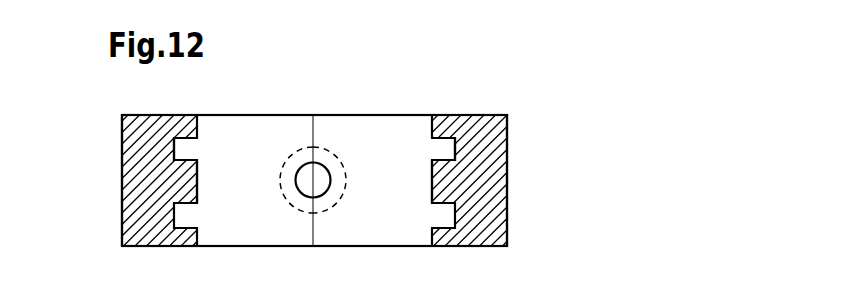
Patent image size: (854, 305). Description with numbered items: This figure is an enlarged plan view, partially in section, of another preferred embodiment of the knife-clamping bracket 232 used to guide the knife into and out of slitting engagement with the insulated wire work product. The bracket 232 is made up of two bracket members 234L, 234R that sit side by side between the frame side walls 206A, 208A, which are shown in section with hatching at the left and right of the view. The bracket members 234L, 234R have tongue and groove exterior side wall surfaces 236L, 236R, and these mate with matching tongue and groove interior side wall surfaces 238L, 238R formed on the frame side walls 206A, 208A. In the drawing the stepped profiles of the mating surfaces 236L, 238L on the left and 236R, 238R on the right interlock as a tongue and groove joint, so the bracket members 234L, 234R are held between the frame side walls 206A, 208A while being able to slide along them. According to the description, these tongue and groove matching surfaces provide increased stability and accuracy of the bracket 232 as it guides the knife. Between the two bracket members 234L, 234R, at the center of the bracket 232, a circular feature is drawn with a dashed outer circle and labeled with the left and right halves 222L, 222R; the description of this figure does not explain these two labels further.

The bracket 232 is at (325, 97).
The frame side wall 206A is at (122, 216).
The frame side wall 208A is at (507, 207).
The tongue and groove interior side wall surface 238L is at (168, 182).
The tongue and groove interior side wall surface 238R is at (448, 183).
The tongue and groove exterior side wall surface 236L is at (192, 143).
The tongue and groove exterior side wall surface 236R is at (432, 149).
The left half of fiber channel 222L is at (312, 198).
The right half of fiber channel 222R is at (314, 198).
The bracket member 234L is at (239, 246).
The bracket member 234R is at (325, 246).